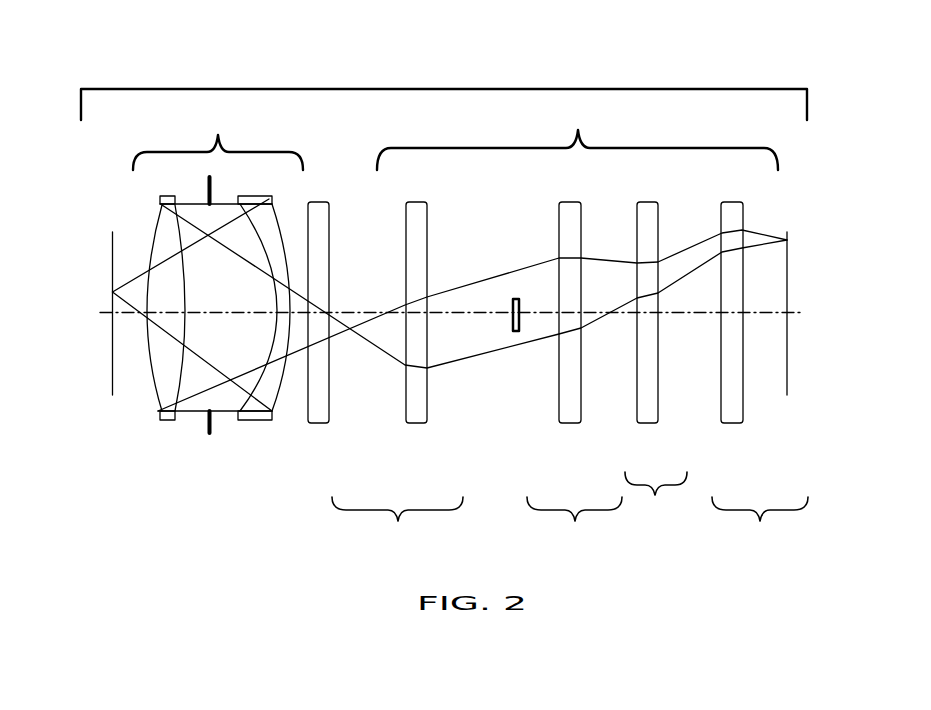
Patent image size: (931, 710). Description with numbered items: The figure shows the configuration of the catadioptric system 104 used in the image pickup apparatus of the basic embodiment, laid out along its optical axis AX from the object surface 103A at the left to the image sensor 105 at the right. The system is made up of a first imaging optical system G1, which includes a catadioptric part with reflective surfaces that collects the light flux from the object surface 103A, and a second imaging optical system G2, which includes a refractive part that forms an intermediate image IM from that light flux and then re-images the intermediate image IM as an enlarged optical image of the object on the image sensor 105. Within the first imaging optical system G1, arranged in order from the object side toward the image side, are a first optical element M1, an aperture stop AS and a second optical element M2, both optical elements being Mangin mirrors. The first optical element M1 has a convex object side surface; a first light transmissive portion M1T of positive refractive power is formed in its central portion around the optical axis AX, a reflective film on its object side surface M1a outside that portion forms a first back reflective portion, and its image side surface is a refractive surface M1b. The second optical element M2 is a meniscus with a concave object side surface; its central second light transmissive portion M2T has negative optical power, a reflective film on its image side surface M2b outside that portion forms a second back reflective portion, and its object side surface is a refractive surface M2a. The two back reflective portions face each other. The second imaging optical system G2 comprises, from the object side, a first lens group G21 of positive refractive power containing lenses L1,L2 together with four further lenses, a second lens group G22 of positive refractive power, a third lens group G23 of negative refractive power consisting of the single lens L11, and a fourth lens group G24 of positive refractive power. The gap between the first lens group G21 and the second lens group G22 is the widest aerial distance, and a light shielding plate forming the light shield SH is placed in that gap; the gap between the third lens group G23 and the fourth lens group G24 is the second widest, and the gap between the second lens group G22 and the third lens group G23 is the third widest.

The catadioptric system 104 is at (382, 88).
The aperture stop AS is at (207, 177).
The first imaging optical system G1 is at (218, 135).
The second imaging optical system G2 is at (578, 130).
The first optical element M1 is at (155, 344).
The second optical element M2 is at (258, 341).
The object side surface of the first optical element M1a is at (161, 422).
The refractive surface of the first optical element M1b is at (180, 382).
The refractive surface of the second optical element M2a is at (272, 411).
The image side surface of the second optical element M2b is at (290, 417).
The first light transmissive portion M1T is at (147, 330).
The second light transmissive portion M2T is at (268, 312).
The object surface 103A is at (111, 300).
The image sensor 105 is at (793, 300).
The intermediate image IM is at (348, 330).
The optical axis AX is at (103, 313).
The light shield SH is at (512, 322).
The lenses L1 and L2 L1,L2 is at (330, 410).
The lens L11 is at (643, 423).
The first lens group G21 is at (397, 523).
The second lens group G22 is at (574, 524).
The third lens group G23 is at (656, 500).
The fourth lens group G24 is at (760, 524).